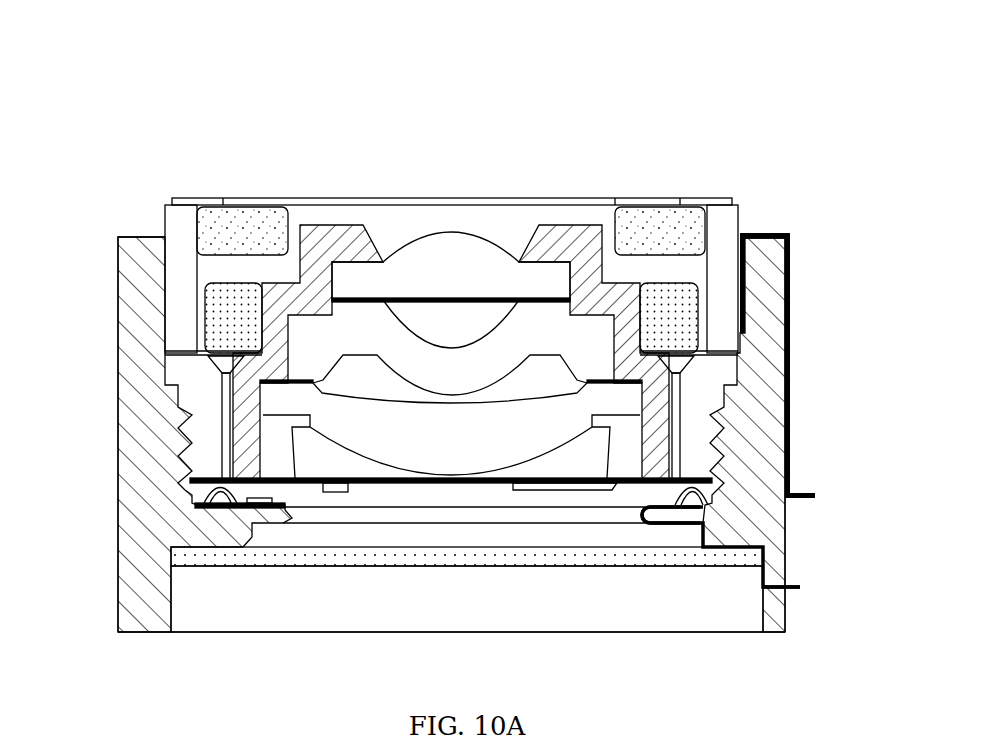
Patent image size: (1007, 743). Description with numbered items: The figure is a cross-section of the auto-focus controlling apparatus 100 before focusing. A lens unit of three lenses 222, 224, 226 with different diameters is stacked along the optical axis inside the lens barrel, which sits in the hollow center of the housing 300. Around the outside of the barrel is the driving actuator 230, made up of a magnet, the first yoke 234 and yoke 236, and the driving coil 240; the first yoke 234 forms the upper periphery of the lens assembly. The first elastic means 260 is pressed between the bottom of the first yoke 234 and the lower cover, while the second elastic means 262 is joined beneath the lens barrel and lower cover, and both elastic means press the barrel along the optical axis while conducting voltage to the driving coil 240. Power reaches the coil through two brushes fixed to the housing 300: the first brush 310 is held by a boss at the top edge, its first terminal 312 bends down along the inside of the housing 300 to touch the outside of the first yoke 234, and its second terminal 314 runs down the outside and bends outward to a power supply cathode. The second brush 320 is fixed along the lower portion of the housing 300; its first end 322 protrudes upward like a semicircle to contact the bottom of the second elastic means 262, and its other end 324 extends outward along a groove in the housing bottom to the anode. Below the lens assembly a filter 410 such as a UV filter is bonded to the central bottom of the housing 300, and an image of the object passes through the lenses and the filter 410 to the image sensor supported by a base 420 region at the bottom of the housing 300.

The auto-focus controlling apparatus 100 is at (752, 82).
The lens 222 is at (396, 330).
The lens 224 is at (466, 245).
The lens 226 is at (503, 417).
The driving actuator 230 is at (633, 218).
The first yoke 234 is at (165, 218).
The yoke 236 is at (255, 198).
The driving coil 240 is at (205, 325).
The first elastic means 260 is at (740, 353).
The second elastic means 262 is at (190, 480).
The housing 300 is at (768, 535).
The first brush 310 is at (764, 233).
The first terminal 312 is at (738, 250).
The second terminal 314 is at (815, 495).
The second brush 320 is at (680, 527).
The first end 322 is at (705, 500).
The other end 324 is at (805, 588).
The filter 410 is at (172, 553).
The bottom plate 420 is at (177, 600).